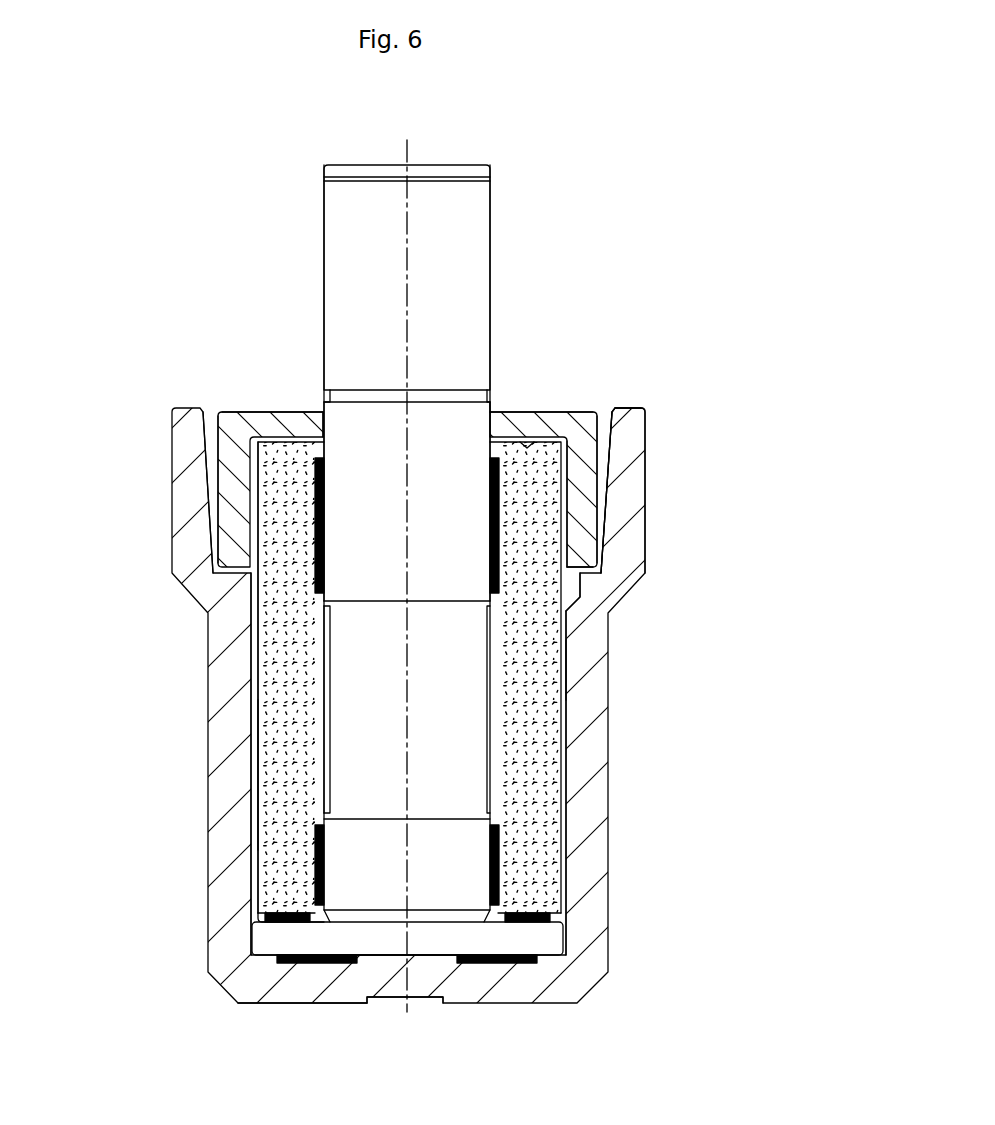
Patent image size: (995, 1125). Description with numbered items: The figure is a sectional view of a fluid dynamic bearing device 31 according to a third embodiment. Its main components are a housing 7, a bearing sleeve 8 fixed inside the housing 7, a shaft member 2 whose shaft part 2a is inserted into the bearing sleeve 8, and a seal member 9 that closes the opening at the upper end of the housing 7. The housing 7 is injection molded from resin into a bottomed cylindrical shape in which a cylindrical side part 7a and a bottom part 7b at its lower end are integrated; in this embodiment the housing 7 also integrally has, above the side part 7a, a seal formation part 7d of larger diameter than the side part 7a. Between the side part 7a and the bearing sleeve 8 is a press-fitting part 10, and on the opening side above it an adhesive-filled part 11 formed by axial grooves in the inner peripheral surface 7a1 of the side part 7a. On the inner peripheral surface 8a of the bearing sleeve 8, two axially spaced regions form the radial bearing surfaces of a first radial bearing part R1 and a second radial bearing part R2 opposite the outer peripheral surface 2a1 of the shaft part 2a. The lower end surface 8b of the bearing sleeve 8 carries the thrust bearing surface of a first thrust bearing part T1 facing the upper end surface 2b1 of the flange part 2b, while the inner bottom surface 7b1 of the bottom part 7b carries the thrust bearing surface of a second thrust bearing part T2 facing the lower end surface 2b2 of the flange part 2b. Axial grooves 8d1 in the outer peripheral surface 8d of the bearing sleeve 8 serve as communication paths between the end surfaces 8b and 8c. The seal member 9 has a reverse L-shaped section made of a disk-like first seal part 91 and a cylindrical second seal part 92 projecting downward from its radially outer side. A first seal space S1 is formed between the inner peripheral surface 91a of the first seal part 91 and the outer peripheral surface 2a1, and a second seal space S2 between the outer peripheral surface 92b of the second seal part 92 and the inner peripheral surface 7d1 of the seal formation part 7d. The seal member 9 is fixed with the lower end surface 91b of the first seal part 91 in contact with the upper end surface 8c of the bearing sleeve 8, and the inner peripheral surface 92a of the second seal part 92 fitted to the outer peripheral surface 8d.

The shaft member 2 is at (492, 238).
The shaft part 2a is at (336, 245).
The outer peripheral surface of shaft part 2a1 is at (492, 817).
The flange part 2b is at (550, 938).
The upper end surface of flange part 2b1 is at (433, 905).
The lower end surface of flange part 2b2 is at (420, 965).
The housing 7 is at (612, 740).
The side part 7a is at (596, 701).
The inner peripheral surface of side part 7a1 is at (265, 660).
The bottom part 7b is at (310, 990).
The inner bottom surface 7b1 is at (380, 943).
The seal formation part 7d is at (630, 452).
The inner peripheral surface of seal formation part 7d1 is at (205, 432).
The bearing sleeve 8 is at (542, 777).
The inner peripheral surface of bearing sleeve 8a is at (340, 713).
The lower end surface of bearing sleeve 8b is at (262, 937).
The upper end surface of bearing sleeve 8c is at (530, 437).
The outer peripheral surface of bearing sleeve 8d is at (255, 855).
The axial grooves 8d1 is at (258, 822).
The seal member 9 is at (580, 408).
The press-fitting part 10 is at (572, 670).
The adhesive-filled part 11 is at (580, 592).
The fluid dynamic bearing device 31 is at (660, 378).
The first seal part 91 is at (282, 410).
The inner peripheral surface of first seal part 91a is at (336, 412).
The lower end surface of first seal part 91b is at (567, 490).
The second seal part 92 is at (232, 505).
The inner peripheral surface of second seal part 92a is at (562, 600).
The outer peripheral surface of second seal part 92b is at (600, 517).
The first radial bearing part R1 is at (503, 528).
The second radial bearing part R2 is at (503, 858).
The first seal space S1 is at (497, 405).
The second seal space S2 is at (608, 408).
The first thrust bearing part T1 is at (537, 912).
The second thrust bearing part T2 is at (500, 965).